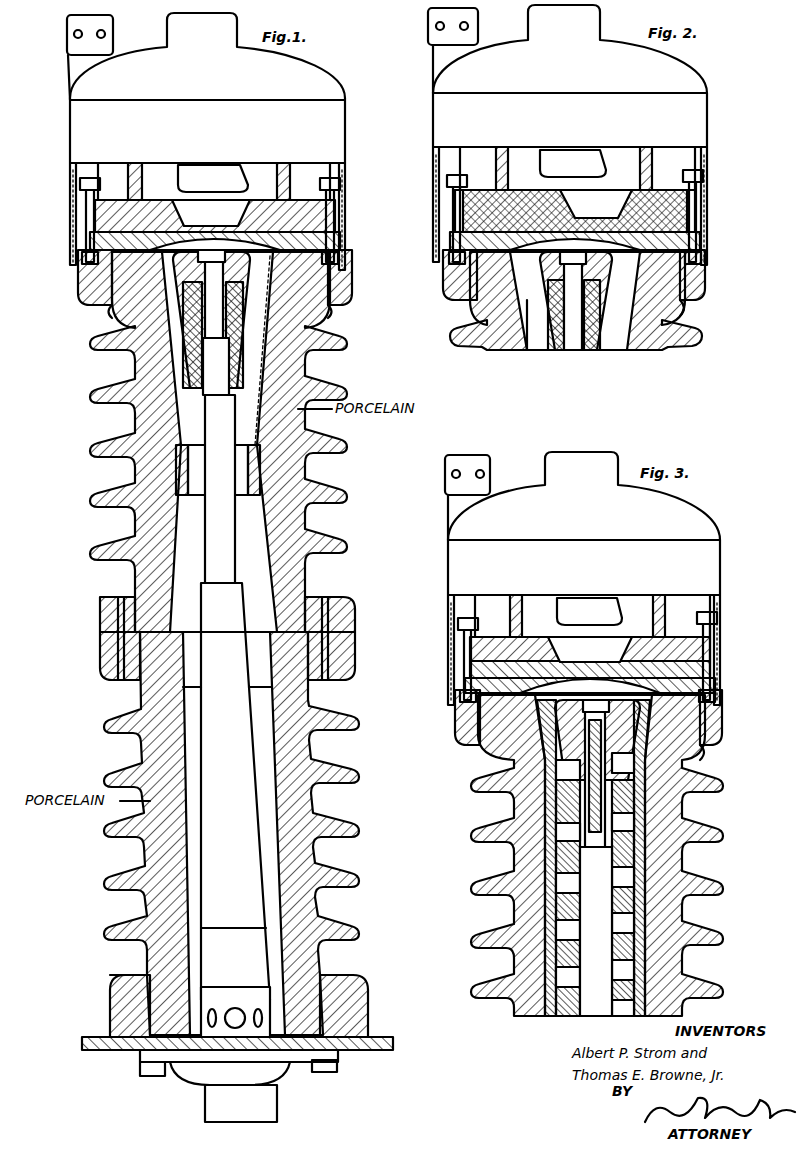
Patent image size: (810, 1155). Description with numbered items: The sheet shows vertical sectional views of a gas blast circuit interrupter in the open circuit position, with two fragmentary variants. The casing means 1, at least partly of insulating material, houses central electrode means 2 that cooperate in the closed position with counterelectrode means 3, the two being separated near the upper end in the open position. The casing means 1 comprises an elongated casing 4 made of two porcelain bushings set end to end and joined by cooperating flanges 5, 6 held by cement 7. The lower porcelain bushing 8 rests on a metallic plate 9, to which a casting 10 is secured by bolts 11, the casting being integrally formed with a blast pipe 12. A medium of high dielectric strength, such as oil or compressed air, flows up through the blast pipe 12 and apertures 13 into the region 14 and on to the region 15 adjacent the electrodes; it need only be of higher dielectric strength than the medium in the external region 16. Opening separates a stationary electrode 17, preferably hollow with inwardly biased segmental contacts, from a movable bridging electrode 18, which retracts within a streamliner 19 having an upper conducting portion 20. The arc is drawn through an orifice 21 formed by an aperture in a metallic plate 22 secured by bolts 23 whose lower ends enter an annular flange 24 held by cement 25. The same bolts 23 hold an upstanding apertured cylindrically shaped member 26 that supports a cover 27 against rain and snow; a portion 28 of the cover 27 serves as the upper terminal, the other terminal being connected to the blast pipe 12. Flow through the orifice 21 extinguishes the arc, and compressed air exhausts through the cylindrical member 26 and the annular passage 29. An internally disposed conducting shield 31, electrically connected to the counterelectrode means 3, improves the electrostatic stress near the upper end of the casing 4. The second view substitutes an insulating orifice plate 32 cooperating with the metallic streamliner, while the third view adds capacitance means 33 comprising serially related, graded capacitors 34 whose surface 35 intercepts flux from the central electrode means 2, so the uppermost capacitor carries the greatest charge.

In FIG. 1, the casing means 1 is at (365, 460).
In FIG. 1, the central electrode means 2 is at (260, 541).
In FIG. 3, the central electrode means 2 is at (621, 901).
In FIG. 1, the counterelectrode means 3 is at (260, 173).
In FIG. 2, the counterelectrode means 3 is at (616, 166).
In FIG. 3, the counterelectrode means 3 is at (637, 615).
In FIG. 1, the elongated casing 4 is at (338, 495).
In FIG. 2, the elongated casing 4 is at (695, 338).
In FIG. 3, the elongated casing 4 is at (715, 830).
In FIG. 1, the flange 5 is at (355, 618).
In FIG. 1, the flange 6 is at (355, 651).
In FIG. 1, the cement 7 is at (348, 672).
In FIG. 1, the lower porcelain bushing 8 is at (350, 774).
In FIG. 1, the metallic plate 9 is at (380, 1037).
In FIG. 1, the casting 10 is at (284, 1080).
In FIG. 1, the bolts 11 is at (152, 1076).
In FIG. 1, the blast pipe 12 is at (277, 1107).
In FIG. 1, the apertures 13 is at (222, 1010).
In FIG. 1, the region 14 is at (194, 663).
In FIG. 1, the region 15 is at (215, 238).
In FIG. 2, the region 15 is at (575, 238).
In FIG. 1, the region 16 is at (68, 355).
In FIG. 1, the stationary electrode 17 is at (180, 178).
In FIG. 2, the stationary electrode 17 is at (542, 165).
In FIG. 3, the stationary electrode 17 is at (559, 616).
In FIG. 1, the movable bridging electrode 18 is at (230, 296).
In FIG. 2, the movable bridging electrode 18 is at (590, 296).
In FIG. 1, the streamliner 19 is at (236, 316).
In FIG. 2, the streamliner 19 is at (592, 328).
In FIG. 1, the upper conducting portion 20 is at (242, 262).
In FIG. 2, the upper conducting portion 20 is at (604, 264).
In FIG. 3, the upper conducting portion 20 is at (597, 773).
In FIG. 1, the orifice 21 is at (222, 224).
In FIG. 2, the orifice 21 is at (580, 216).
In FIG. 1, the metallic plate 22 is at (345, 220).
In FIG. 2, the metallic plate 22 is at (707, 220).
In FIG. 3, the metallic plate 22 is at (720, 664).
In FIG. 1, the bolts 23 is at (90, 178).
In FIG. 2, the bolts 23 is at (690, 170).
In FIG. 3, the bolts 23 is at (702, 614).
In FIG. 1, the annular flange 24 is at (348, 298).
In FIG. 2, the annular flange 24 is at (704, 292).
In FIG. 3, the annular flange 24 is at (722, 734).
In FIG. 1, the cement 25 is at (332, 312).
In FIG. 2, the cement 25 is at (688, 308).
In FIG. 3, the cement 25 is at (708, 752).
In FIG. 1, the cylindrically shaped member 26 is at (140, 165).
In FIG. 1, the cover 27 is at (333, 72).
In FIG. 2, the cover 27 is at (708, 106).
In FIG. 3, the cover 27 is at (718, 510).
In FIG. 1, the portion of the cover 28 is at (67, 36).
In FIG. 2, the portion of the cover 28 is at (428, 30).
In FIG. 3, the portion of the cover 28 is at (445, 475).
In FIG. 1, the annular passage 29 is at (345, 262).
In FIG. 2, the annular passage 29 is at (707, 262).
In FIG. 3, the annular passage 29 is at (720, 705).
In FIG. 1, the conducting shield 31 is at (178, 440).
In FIG. 2, the conducting shield 31 is at (520, 322).
In FIG. 2, the insulating orifice plate 32 is at (455, 226).
In FIG. 3, the capacitance means 33 is at (558, 830).
In FIG. 3, the capacitors 34 is at (540, 718).
In FIG. 3, the surface 35 is at (566, 678).